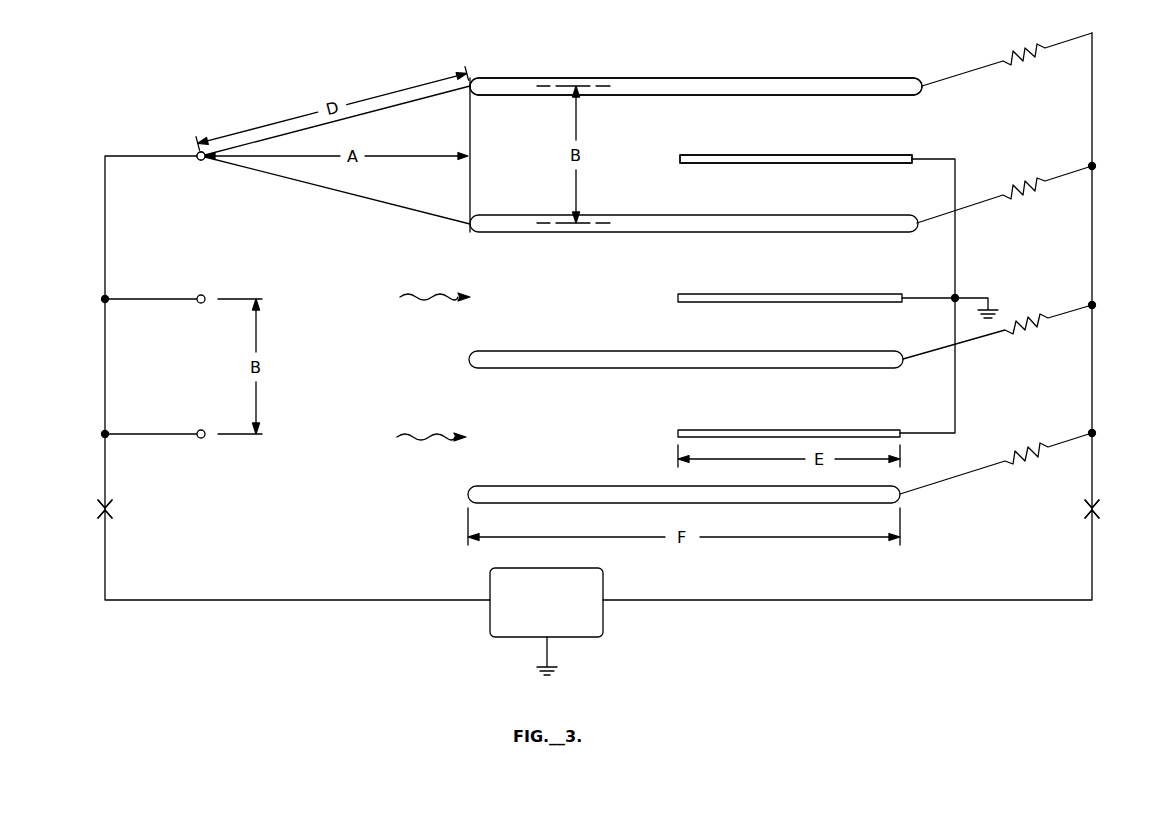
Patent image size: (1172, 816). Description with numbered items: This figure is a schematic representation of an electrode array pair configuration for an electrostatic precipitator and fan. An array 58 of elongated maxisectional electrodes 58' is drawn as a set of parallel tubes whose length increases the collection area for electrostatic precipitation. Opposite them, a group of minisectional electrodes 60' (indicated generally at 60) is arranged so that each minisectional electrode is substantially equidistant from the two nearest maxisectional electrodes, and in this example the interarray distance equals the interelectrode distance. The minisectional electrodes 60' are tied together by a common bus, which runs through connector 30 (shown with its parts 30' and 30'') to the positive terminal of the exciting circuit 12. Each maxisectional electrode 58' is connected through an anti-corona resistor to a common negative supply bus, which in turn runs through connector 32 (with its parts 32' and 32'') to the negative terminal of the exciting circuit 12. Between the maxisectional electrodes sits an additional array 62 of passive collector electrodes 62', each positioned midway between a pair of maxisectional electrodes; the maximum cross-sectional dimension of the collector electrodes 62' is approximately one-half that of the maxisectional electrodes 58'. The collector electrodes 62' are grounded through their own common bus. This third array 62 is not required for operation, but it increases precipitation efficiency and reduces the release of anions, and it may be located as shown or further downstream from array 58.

The exciting circuit 12 is at (590, 568).
The connector 30 is at (77, 523).
The first lead portion 30' is at (84, 498).
The first lead portion 30'' is at (129, 531).
The connector 32 is at (1127, 511).
The second lead portion 32' is at (1110, 492).
The second lead portion 32'' is at (1112, 530).
The array 58 is at (696, 71).
The maxisectional electrodes 58' is at (695, 275).
The emitter electrode assembly 60 is at (176, 134).
The minisectional electrodes 60' is at (333, 283).
The array of passive collector electrodes 62 is at (812, 144).
The passive collector electrodes 62' is at (795, 281).